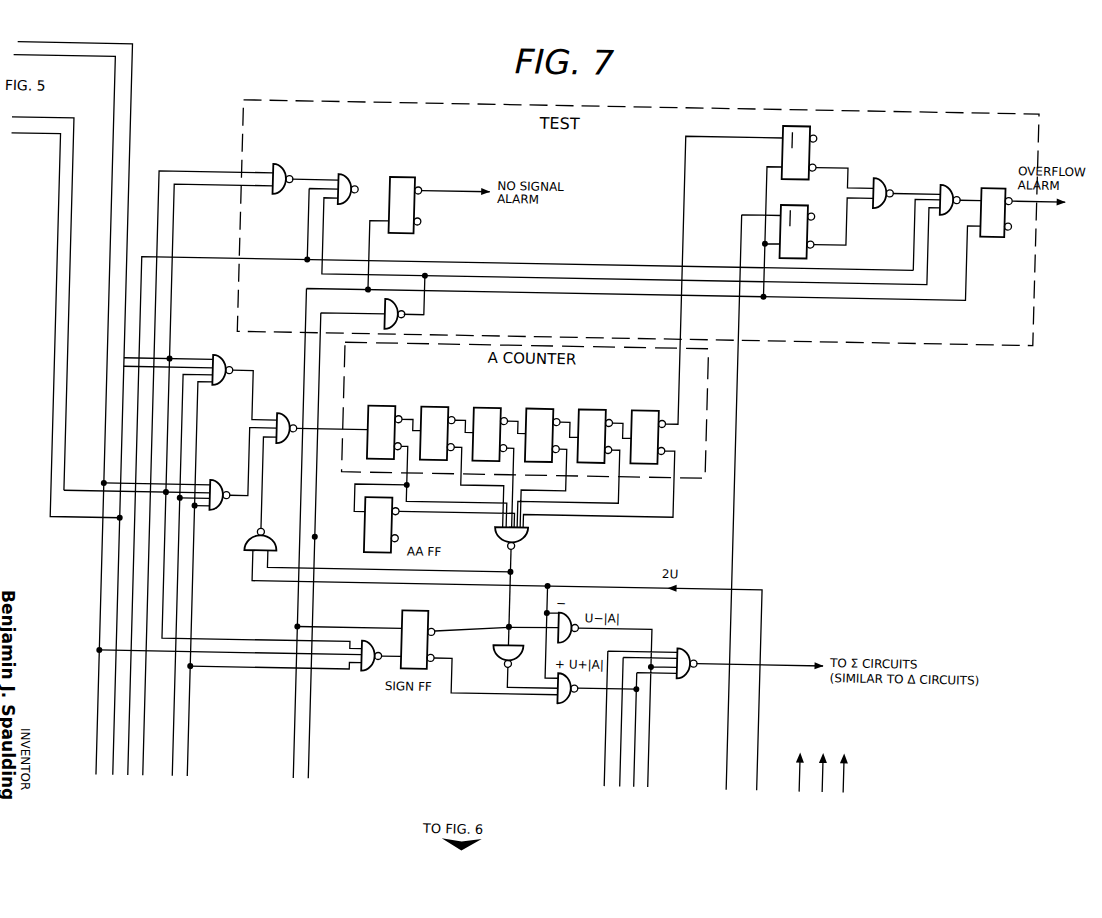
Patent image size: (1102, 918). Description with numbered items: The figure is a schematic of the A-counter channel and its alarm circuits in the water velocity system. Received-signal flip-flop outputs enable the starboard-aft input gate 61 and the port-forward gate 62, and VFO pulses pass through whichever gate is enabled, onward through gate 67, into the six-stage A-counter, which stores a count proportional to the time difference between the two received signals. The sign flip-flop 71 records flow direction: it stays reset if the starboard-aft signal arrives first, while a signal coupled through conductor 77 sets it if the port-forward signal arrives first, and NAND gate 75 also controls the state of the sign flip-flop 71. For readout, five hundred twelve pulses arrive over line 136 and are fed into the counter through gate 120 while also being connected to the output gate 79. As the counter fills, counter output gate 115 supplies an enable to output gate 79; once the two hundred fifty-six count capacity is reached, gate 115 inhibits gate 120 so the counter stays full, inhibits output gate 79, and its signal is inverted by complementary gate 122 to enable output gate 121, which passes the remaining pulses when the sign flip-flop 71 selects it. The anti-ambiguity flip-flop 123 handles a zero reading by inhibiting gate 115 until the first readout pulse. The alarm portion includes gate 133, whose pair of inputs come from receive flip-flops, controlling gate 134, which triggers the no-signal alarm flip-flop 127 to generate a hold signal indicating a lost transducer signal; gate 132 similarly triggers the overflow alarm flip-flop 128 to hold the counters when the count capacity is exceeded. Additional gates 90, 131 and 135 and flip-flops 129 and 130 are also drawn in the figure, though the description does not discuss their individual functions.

The starboard-aft input gate 61 is at (219, 366).
The port-forward gate 62 is at (216, 488).
The gate 67 is at (289, 413).
The sign flip-flop 71 is at (422, 650).
The NAND gate 75 is at (374, 676).
The conductor 77 is at (252, 655).
The output gate 79 is at (575, 703).
The NAND gate 90 is at (685, 648).
The counter output gate 115 is at (530, 538).
The gate 120 is at (247, 550).
The output gate 121 is at (574, 615).
The complementary gate 122 is at (502, 651).
The anti-ambiguity flip-flop 123 is at (392, 526).
The no-signal alarm flip-flop 127 is at (398, 183).
The overflow alarm flip-flop 128 is at (987, 229).
The flip-flop 129 is at (797, 147).
The flip-flop 130 is at (793, 208).
The NAND gate 131 is at (873, 177).
The gate 132 is at (941, 183).
The gate 133 is at (269, 175).
The gate 134 is at (339, 176).
The NAND gate 135 is at (381, 309).
The line 136 is at (756, 588).